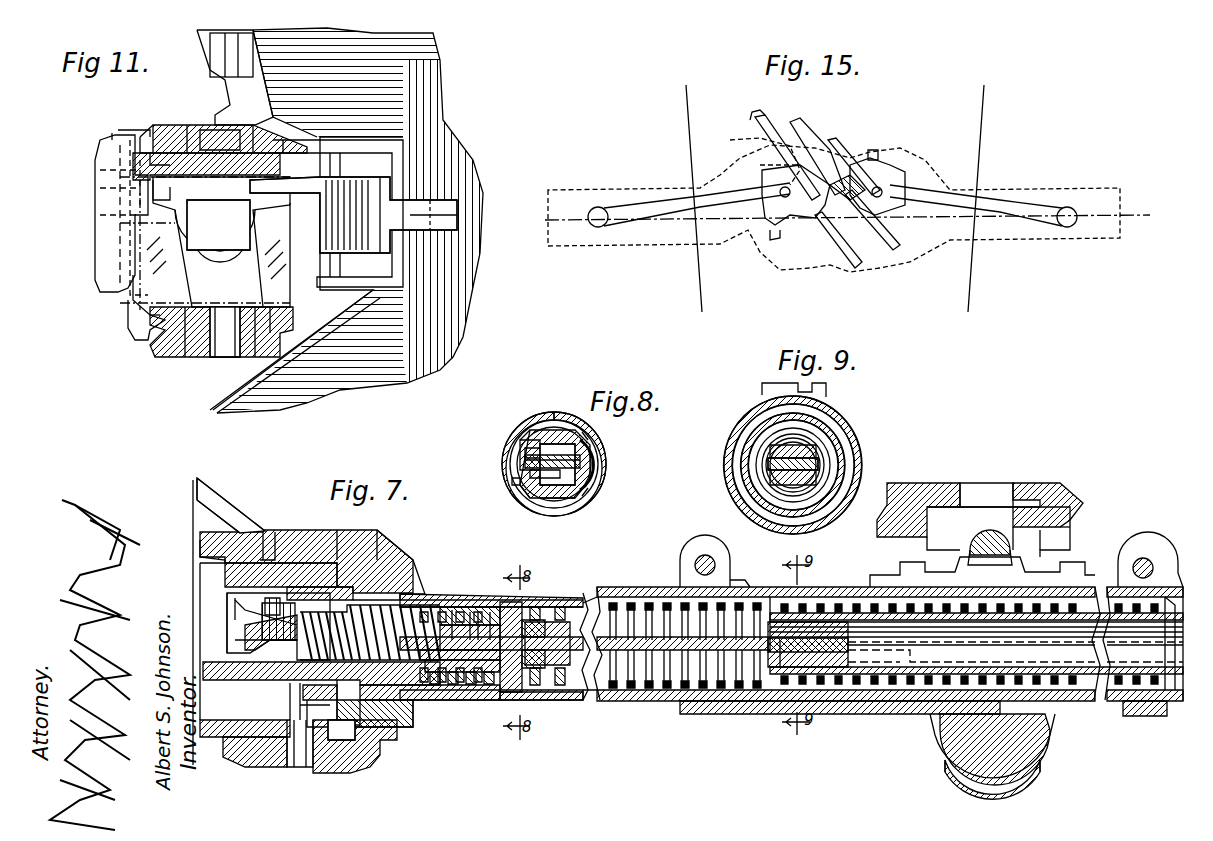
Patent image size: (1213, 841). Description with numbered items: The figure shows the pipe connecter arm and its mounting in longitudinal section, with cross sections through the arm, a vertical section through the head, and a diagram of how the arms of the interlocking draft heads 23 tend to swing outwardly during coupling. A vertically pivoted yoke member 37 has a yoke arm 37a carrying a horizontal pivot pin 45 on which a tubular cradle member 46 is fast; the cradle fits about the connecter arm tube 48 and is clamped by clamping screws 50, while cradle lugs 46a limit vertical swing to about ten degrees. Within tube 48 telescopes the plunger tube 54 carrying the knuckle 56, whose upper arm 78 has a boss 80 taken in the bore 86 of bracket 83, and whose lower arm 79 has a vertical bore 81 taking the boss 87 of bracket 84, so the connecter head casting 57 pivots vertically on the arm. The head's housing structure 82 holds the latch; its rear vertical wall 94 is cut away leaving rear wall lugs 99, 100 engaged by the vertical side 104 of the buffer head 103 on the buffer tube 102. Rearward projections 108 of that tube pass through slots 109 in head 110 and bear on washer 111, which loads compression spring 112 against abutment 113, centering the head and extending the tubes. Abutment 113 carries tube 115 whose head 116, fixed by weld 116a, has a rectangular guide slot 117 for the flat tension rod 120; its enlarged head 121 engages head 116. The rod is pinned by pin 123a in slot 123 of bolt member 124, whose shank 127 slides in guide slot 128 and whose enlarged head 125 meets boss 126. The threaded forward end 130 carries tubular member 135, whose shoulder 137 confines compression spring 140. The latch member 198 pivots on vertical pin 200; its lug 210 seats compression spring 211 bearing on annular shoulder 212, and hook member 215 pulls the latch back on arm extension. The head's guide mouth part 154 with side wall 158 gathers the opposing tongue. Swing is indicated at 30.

In FIG. 15, the interlocking heads 23 is at (735, 160).
In FIG. 15, the axle arm 30 is at (725, 195).
In FIG. 7, the yoke member 37 is at (1080, 497).
In FIG. 7, the yoke arm 37a is at (1075, 530).
In FIG. 7, the horizontal pivot pin 45 is at (1020, 720).
In FIG. 9, the cradle member 46 is at (862, 453).
In FIG. 7, the cradle member 46 is at (863, 725).
In FIG. 7, the cradle lugs 46a is at (1080, 565).
In FIG. 9, the connecter arm tube 48 is at (862, 468).
In FIG. 7, the connecter arm tube 48 is at (650, 710).
In FIG. 7, the clamping screws 50 is at (705, 523).
In FIG. 8, the plunger tube 54 is at (607, 460).
In FIG. 7, the plunger tube 54 is at (585, 690).
In FIG. 7, the knuckle 56 is at (415, 560).
In FIG. 7, the connecter head casting 57 is at (240, 495).
In FIG. 11, the upper arm 78 is at (130, 157).
In FIG. 7, the upper arm 78 is at (380, 570).
In FIG. 11, the lower arm 79 is at (168, 352).
In FIG. 7, the lower arm 79 is at (360, 762).
In FIG. 11, the boss 80 is at (212, 126).
In FIG. 7, the boss 80 is at (312, 540).
In FIG. 7, the vertical bore 81 is at (270, 765).
In FIG. 11, the housing structure 82 is at (124, 323).
In FIG. 11, the bracket 83 is at (176, 126).
In FIG. 7, the bracket 83 is at (238, 538).
In FIG. 7, the bracket 84 is at (222, 730).
In FIG. 7, the bore 86 is at (275, 538).
In FIG. 11, the boss 87 is at (215, 357).
In FIG. 7, the boss 87 is at (325, 762).
In FIG. 11, the rear vertical wall 94 is at (160, 318).
In FIG. 11, the rear wall lug 99 is at (140, 345).
In FIG. 11, the rear wall lug 100 is at (260, 280).
In FIG. 7, the buffer tube 102 is at (440, 700).
In FIG. 7, the buffer head 103 is at (318, 600).
In FIG. 7, the vertical side 104 is at (300, 698).
In FIG. 8, the rearward projections 108 is at (603, 440).
In FIG. 7, the rearward projections 108 is at (480, 615).
In FIG. 8, the slots 109 is at (498, 420).
In FIG. 8, the head 110 is at (555, 414).
In FIG. 7, the head 110 is at (518, 580).
In FIG. 7, the washer 111 is at (540, 605).
In FIG. 9, the compression spring 112 is at (835, 445).
In FIG. 7, the compression spring 112 is at (605, 612).
In FIG. 7, the abutment 113 is at (1150, 718).
In FIG. 7, the tube 115 is at (1035, 667).
In FIG. 9, the head 116 is at (755, 510).
In FIG. 7, the head 116 is at (775, 690).
In FIG. 7, the weld 116a is at (818, 690).
In FIG. 9, the rectangular guide slot 117 is at (840, 418).
In FIG. 8, the tension rod 120 is at (575, 498).
In FIG. 9, the tension rod 120 is at (765, 440).
In FIG. 7, the tension rod 120 is at (682, 700).
In FIG. 7, the enlarged head 121 is at (842, 690).
In FIG. 7, the slot 123 is at (555, 692).
In FIG. 7, the pin 123a is at (495, 700).
In FIG. 8, the bolt member 124 is at (560, 440).
In FIG. 7, the bolt member 124 is at (450, 605).
In FIG. 7, the enlarged head 125 is at (580, 610).
In FIG. 7, the boss 126 is at (556, 618).
In FIG. 8, the shank 127 is at (540, 498).
In FIG. 8, the guide slot 128 is at (520, 478).
In FIG. 7, the forward end 130 is at (462, 700).
In FIG. 7, the tubular member 135 is at (420, 600).
In FIG. 7, the shoulder 137 is at (350, 685).
In FIG. 7, the compression spring 140 is at (478, 700).
In FIG. 11, the guide mouth part 154 is at (487, 154).
In FIG. 11, the side wall 158 is at (448, 118).
In FIG. 11, the latch member 198 is at (350, 215).
In FIG. 11, the vertical pin 200 is at (118, 288).
In FIG. 11, the lug 210 is at (238, 225).
In FIG. 7, the lug 210 is at (255, 655).
In FIG. 7, the compression spring 211 is at (260, 620).
In FIG. 7, the annular shoulder 212 is at (413, 700).
In FIG. 7, the hook member 215 is at (272, 682).